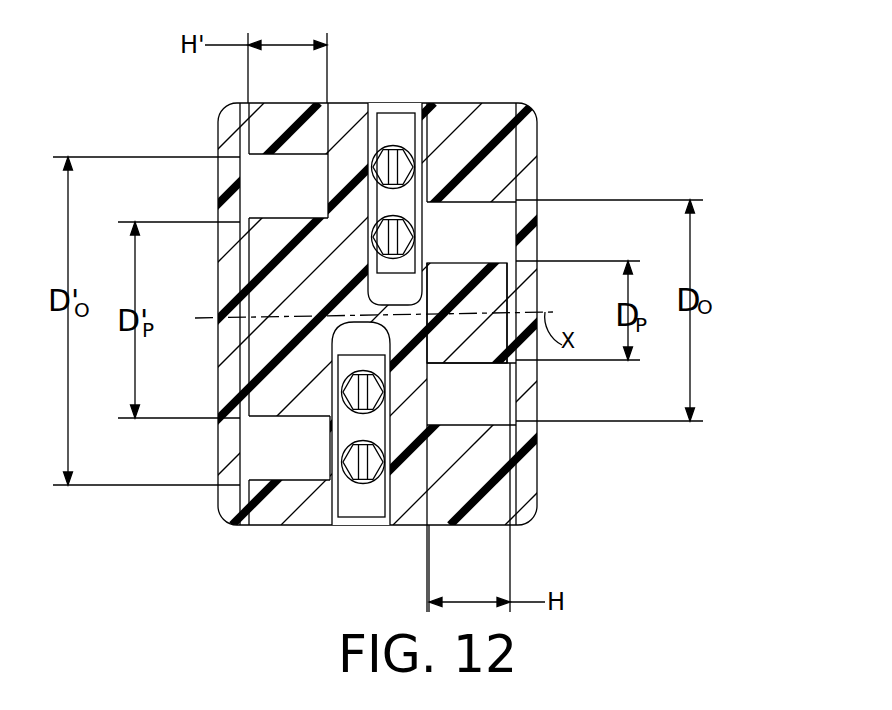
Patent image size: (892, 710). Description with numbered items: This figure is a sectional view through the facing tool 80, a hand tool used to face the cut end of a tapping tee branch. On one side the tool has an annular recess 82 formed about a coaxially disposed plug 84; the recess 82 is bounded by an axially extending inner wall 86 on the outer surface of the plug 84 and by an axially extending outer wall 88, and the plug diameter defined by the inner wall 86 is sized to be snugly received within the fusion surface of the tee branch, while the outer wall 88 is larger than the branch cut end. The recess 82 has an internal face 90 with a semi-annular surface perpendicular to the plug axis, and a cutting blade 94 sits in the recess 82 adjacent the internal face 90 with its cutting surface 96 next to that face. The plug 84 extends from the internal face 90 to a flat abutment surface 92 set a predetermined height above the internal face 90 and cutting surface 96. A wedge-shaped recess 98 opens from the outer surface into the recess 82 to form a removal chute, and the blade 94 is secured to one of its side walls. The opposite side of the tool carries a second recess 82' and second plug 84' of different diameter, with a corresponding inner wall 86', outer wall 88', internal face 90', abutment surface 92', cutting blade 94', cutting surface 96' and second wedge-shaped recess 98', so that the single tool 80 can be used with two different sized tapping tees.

The facing tool 80 is at (484, 80).
The annular recess 82 is at (505, 221).
The second recess 82' is at (240, 177).
The plug 84 is at (467, 298).
The second plug 84' is at (289, 433).
The inner wall 86 is at (471, 379).
The inner wall 86' is at (288, 205).
The outer wall 88 is at (471, 411).
The outer wall 88' is at (288, 144).
The internal face 90 is at (458, 437).
The internal face 90' is at (297, 147).
The abutment surface 92 is at (543, 313).
The abutment surface 92' is at (202, 317).
The cutting blade 94 is at (414, 178).
The cutting blade 94' is at (361, 448).
The cutting surface 96 is at (435, 202).
The cutting surface 96' is at (328, 427).
The wedge-shaped recess 98 is at (394, 162).
The second wedge-shaped recess 98' is at (378, 465).